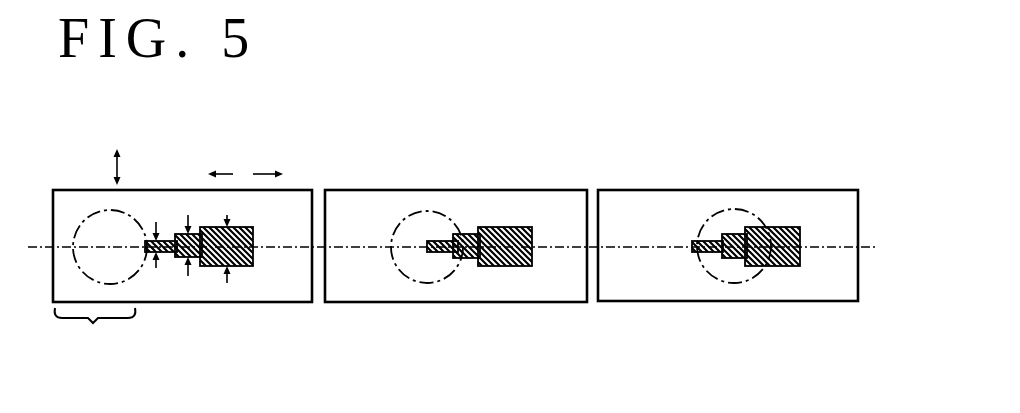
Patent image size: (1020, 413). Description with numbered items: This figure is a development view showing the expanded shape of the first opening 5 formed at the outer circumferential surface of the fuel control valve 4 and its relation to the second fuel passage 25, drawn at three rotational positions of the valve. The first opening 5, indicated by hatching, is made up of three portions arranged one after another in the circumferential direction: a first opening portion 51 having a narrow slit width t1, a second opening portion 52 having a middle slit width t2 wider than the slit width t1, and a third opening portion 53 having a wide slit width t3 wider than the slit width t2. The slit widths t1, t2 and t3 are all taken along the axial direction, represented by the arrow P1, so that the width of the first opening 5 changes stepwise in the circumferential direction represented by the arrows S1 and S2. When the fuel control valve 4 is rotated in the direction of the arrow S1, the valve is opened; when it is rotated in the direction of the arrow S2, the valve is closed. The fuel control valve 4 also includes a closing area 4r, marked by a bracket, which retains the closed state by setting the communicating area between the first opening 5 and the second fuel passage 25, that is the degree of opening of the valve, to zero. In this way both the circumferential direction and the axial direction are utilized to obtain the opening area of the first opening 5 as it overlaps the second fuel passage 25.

The fuel control valve 4 is at (858, 277).
The closing area 4r is at (95, 331).
The first opening 5 is at (496, 290).
The second fuel passage 25 is at (84, 221).
The first opening portion 51 is at (170, 257).
The second opening portion 52 is at (192, 258).
The third opening portion 53 is at (242, 267).
The axial direction arrow P1 is at (119, 166).
The first circumferential direction arrow S1 is at (230, 173).
The second circumferential direction arrow S2 is at (262, 171).
The slit width t1 is at (157, 231).
The slit width t2 is at (189, 232).
The slit width t3 is at (239, 235).